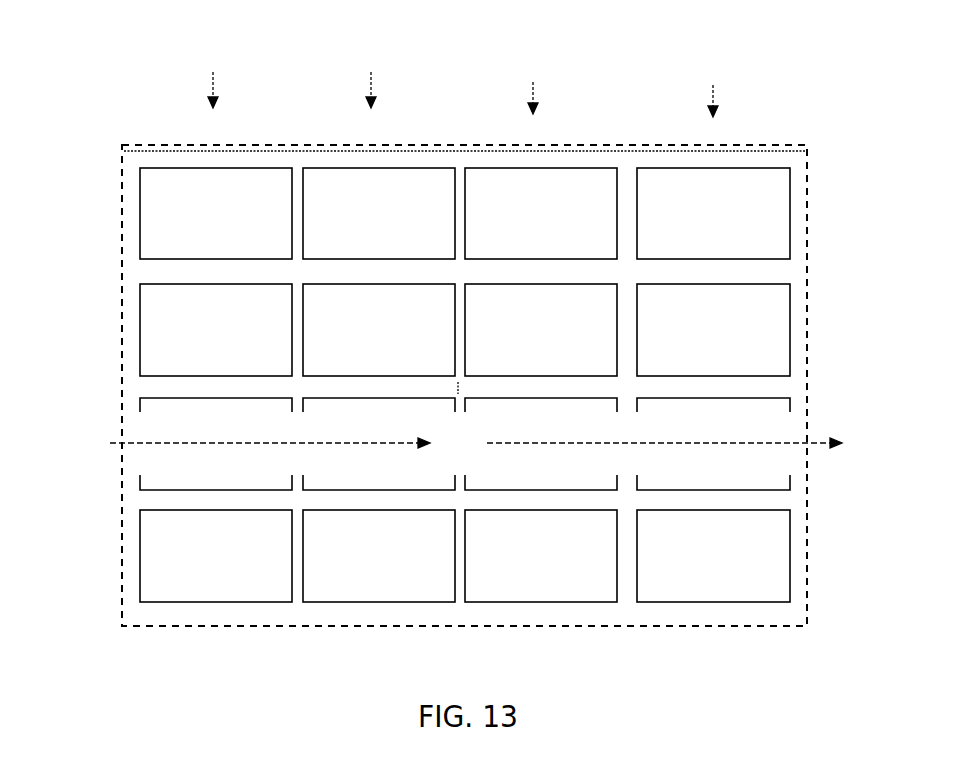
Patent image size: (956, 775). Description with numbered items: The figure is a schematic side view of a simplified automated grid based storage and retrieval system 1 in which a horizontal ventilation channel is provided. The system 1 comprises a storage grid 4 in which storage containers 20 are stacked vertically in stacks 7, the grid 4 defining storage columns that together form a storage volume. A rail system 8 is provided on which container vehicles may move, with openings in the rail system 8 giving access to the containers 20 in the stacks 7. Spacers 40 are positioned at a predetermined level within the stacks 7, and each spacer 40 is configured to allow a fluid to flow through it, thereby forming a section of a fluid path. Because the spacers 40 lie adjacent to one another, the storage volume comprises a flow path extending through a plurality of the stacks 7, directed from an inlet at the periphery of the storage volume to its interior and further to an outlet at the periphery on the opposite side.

The automated grid based storage and retrieval system 1 is at (101, 53).
The storage grid 4 is at (809, 183).
The stacks 7 is at (464, 83).
The rail system 8 is at (768, 151).
The storage containers 20 is at (128, 556).
The spacers 40 is at (128, 478).